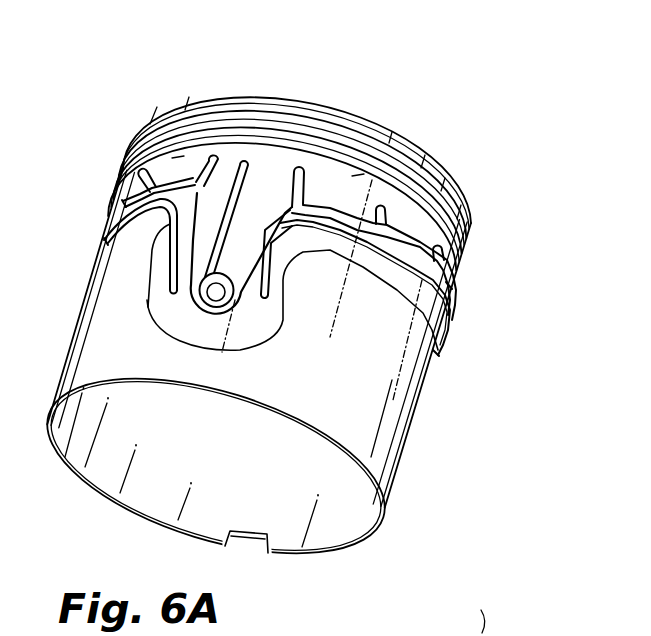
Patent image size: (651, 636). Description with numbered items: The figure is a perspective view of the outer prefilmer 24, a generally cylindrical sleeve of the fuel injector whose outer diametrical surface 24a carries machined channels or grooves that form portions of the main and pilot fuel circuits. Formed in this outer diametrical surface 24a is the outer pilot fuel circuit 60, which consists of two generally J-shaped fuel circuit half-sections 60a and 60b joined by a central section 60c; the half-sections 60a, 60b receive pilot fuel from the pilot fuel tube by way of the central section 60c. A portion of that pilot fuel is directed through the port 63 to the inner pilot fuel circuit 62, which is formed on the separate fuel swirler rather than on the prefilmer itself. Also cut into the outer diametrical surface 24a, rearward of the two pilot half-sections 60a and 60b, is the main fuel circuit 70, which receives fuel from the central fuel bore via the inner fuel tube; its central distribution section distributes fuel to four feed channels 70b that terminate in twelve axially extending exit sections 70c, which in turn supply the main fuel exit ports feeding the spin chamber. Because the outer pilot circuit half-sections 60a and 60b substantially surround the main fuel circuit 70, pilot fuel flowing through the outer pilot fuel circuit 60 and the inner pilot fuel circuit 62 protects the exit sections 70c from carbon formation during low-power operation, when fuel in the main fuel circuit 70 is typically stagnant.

The outer prefilmer 24 is at (472, 89).
The outer diametrical surface 24a is at (397, 412).
The outer pilot fuel circuit 60 is at (247, 186).
The pilot fuel circuit half-section 60a is at (178, 157).
The pilot fuel circuit half-section 60b is at (357, 175).
The central section 60c is at (228, 250).
The inner pilot fuel circuit 62 is at (465, 616).
The port 63 is at (218, 338).
The main fuel circuit 70 is at (275, 333).
The feed channels 70b is at (123, 203).
The exit sections 70c is at (135, 160).